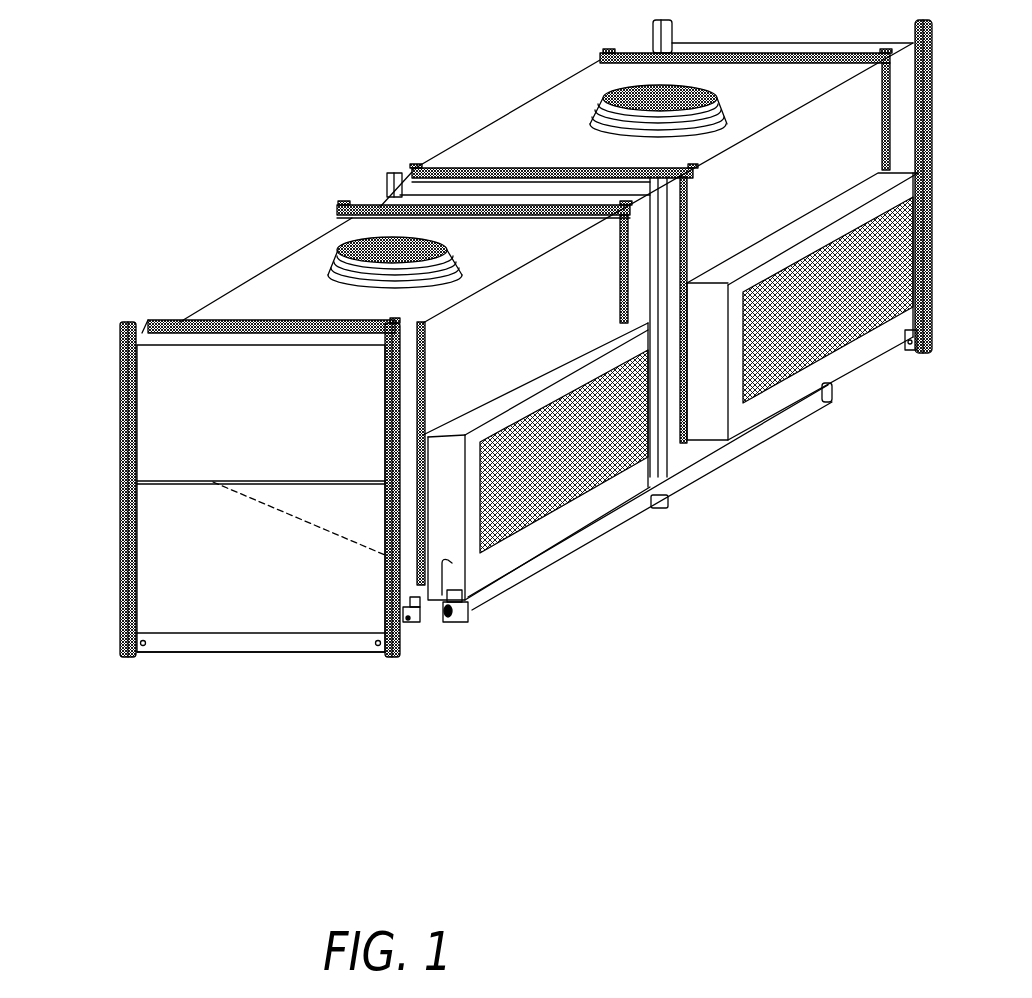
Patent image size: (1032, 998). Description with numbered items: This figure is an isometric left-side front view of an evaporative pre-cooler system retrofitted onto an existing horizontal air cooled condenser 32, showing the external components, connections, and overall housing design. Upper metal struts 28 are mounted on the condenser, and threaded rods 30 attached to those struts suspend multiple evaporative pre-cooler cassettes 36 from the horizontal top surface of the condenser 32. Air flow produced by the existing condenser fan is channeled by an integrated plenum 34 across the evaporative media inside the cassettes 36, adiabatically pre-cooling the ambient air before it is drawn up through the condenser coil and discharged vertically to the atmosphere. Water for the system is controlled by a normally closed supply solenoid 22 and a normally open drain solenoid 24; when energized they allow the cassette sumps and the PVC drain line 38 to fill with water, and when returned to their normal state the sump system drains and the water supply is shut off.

The H2O supply solenoid 22 is at (415, 623).
The drain solenoid 24 is at (458, 613).
The upper metal struts 28 is at (275, 320).
The threaded rods 30 is at (163, 318).
The horizontal air cooled condenser 32 is at (221, 407).
The integrated plenum 34 is at (310, 505).
The evaporative pre-cooler cassettes 36 is at (490, 410).
The PVC drain line 38 is at (727, 452).